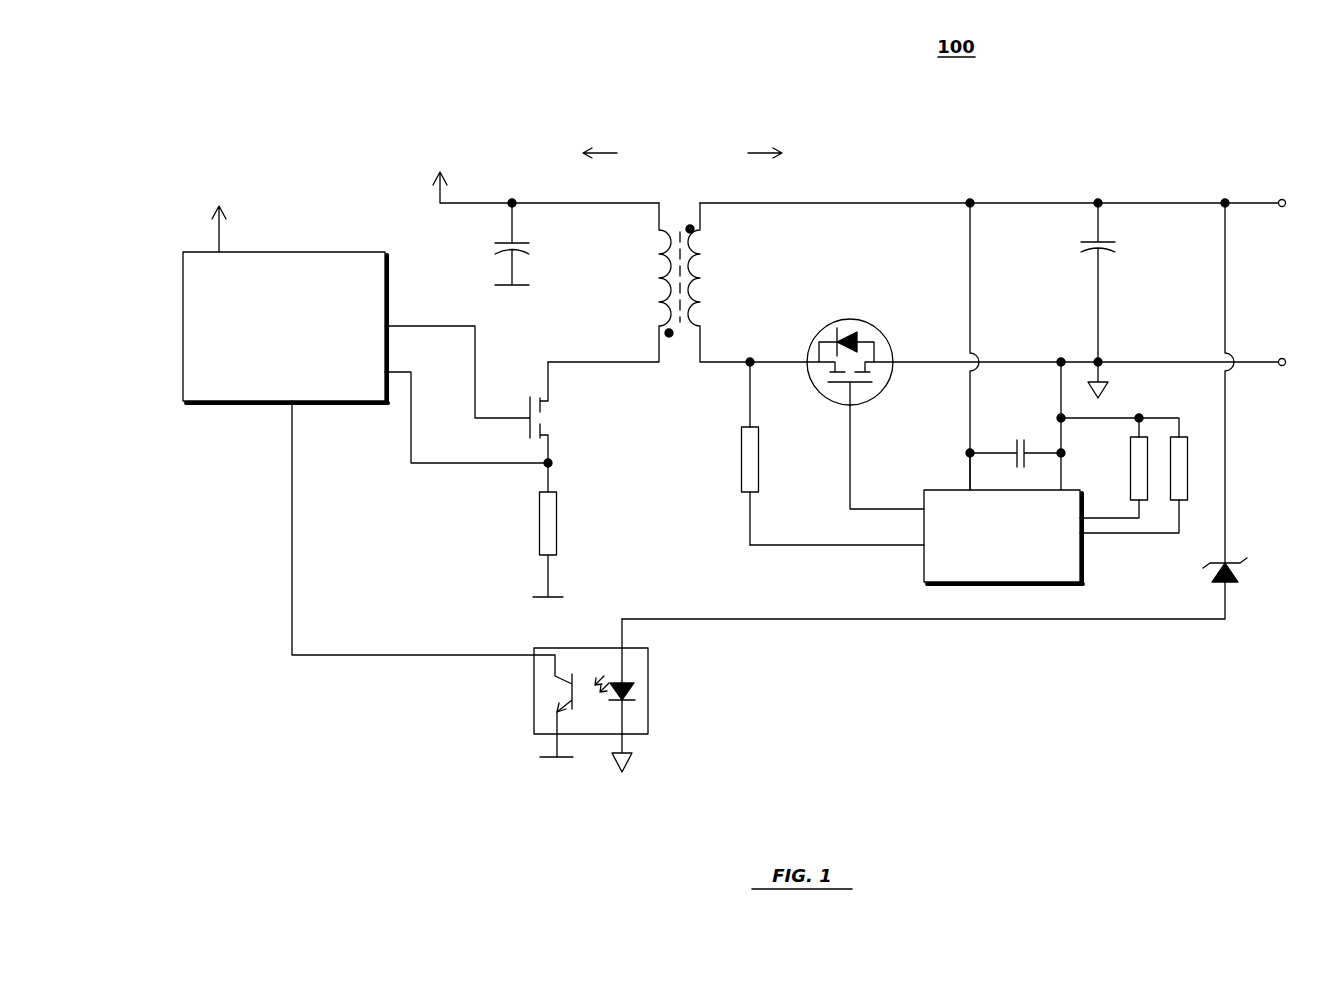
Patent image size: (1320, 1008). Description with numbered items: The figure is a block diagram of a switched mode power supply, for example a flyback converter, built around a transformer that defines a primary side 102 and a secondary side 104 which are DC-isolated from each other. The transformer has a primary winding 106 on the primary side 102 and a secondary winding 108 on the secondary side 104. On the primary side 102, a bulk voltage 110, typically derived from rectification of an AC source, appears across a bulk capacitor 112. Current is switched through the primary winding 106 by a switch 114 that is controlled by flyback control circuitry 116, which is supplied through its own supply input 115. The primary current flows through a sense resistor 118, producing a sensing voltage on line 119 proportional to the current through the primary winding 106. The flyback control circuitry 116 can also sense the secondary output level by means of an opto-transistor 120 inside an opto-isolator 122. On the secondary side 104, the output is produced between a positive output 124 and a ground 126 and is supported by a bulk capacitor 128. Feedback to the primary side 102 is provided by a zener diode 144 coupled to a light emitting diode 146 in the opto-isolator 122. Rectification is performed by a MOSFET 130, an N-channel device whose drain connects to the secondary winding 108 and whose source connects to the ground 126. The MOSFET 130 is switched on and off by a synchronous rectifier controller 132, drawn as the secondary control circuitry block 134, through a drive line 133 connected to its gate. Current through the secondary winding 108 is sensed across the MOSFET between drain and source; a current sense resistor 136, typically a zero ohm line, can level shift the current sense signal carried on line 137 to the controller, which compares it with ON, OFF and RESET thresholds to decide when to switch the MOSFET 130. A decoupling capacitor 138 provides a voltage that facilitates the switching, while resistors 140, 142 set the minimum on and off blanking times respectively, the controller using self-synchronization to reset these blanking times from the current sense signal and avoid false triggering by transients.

The primary side 102 is at (618, 153).
The secondary side 104 is at (744, 153).
The primary winding 106 is at (659, 273).
The secondary winding 108 is at (700, 268).
The bulk voltage 110 is at (437, 190).
The bulk capacitor 112 is at (495, 250).
The switch 114 is at (548, 404).
The supply voltage input 115 is at (219, 238).
The flyback control circuitry 116 is at (226, 402).
The sense resistor 118 is at (557, 519).
The line 119 is at (447, 463).
The opto-transistor 120 is at (558, 677).
The opto-isolator 122 is at (548, 648).
The positive output 124 is at (1248, 203).
The ground 126 is at (1262, 362).
The bulk capacitor 128 is at (1093, 250).
The MOSFET 130 is at (878, 331).
The synchronous rectifier controller 132 is at (938, 490).
The drive line 133 is at (850, 464).
The secondary control circuitry 134 is at (924, 566).
The current sense resistor 136 is at (759, 464).
The line 137 is at (836, 545).
The decoupling capacitor 138 is at (1026, 447).
The resistor 140 is at (1130, 467).
The resistor 142 is at (1190, 452).
The zener diode 144 is at (1236, 573).
The light emitting diode 146 is at (634, 692).